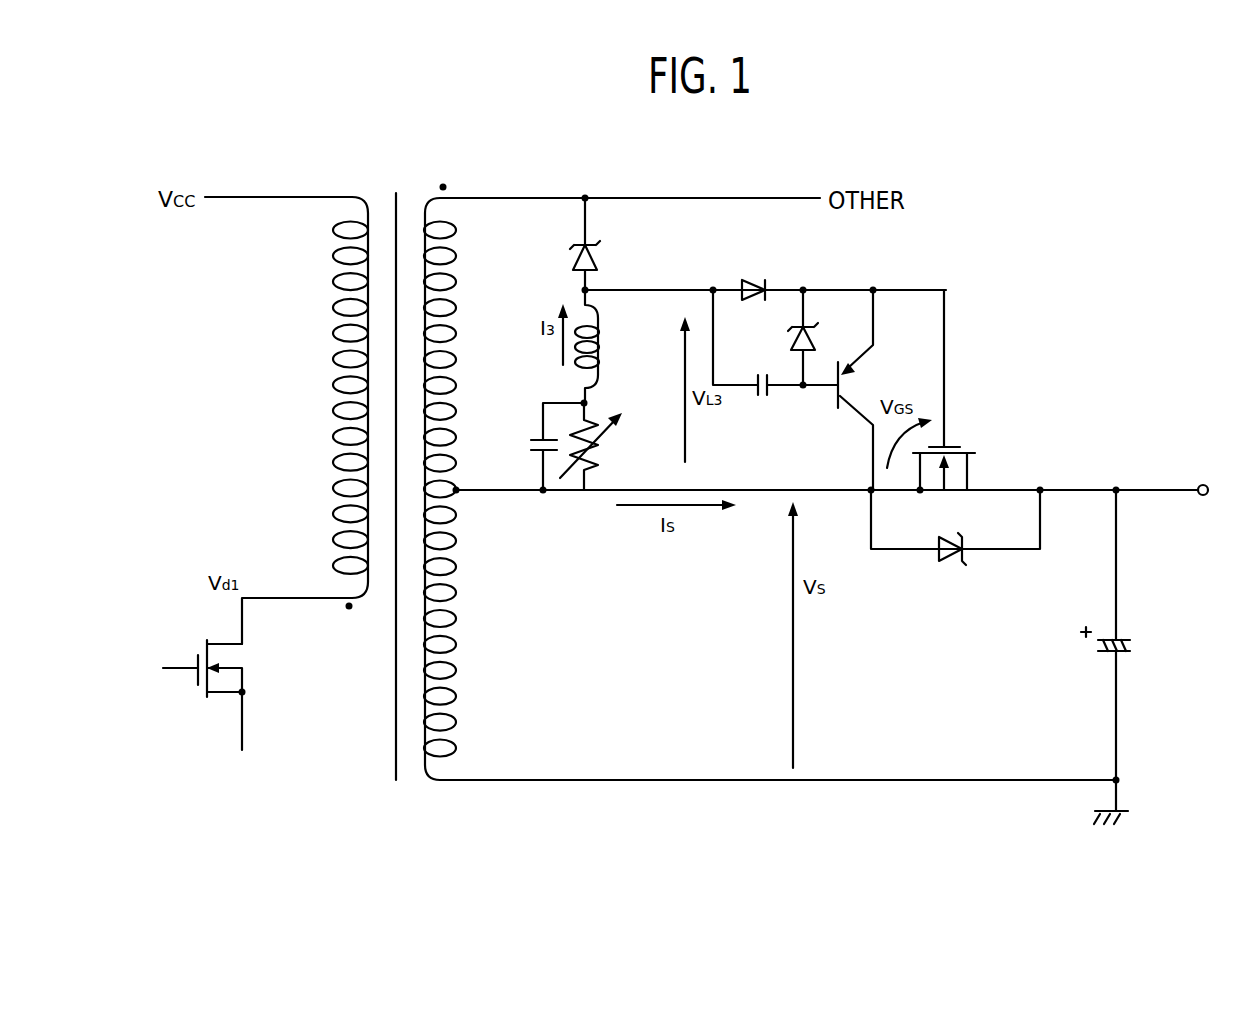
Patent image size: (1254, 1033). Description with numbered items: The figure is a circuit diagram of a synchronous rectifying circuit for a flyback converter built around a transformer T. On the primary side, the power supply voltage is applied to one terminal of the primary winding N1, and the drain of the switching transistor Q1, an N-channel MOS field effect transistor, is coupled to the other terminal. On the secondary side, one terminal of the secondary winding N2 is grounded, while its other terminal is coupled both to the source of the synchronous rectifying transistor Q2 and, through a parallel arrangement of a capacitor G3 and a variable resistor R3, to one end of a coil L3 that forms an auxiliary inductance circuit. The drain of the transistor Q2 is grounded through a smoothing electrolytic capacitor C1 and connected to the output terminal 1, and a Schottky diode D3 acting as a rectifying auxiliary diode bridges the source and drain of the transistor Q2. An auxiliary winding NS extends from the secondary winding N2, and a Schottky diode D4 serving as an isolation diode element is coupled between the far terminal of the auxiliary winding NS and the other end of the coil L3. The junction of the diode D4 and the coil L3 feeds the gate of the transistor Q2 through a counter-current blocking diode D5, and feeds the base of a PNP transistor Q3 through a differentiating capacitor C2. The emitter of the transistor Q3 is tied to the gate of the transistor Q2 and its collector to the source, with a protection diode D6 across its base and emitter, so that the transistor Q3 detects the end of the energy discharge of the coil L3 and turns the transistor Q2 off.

The output terminal 1 is at (1199, 486).
The switching transistor Q1 is at (219, 686).
The synchronous rectifying transistor Q2 is at (945, 406).
The control transistor Q3 is at (849, 389).
The rectifying auxiliary diode D3 is at (955, 543).
The isolation diode element D4 is at (601, 244).
The counter-current blocking diode D5 is at (738, 276).
The protection diode D6 is at (818, 338).
The smoothing electrolytic capacitor C1 is at (1123, 649).
The differentiating capacitor C2 is at (775, 356).
The coil L3 is at (601, 346).
The variable resistor R3 is at (593, 446).
The capacitor G3 is at (541, 448).
The transformer T is at (396, 474).
The primary winding N1 is at (286, 420).
The secondary winding N2 is at (770, 635).
The auxiliary winding NS is at (622, 341).